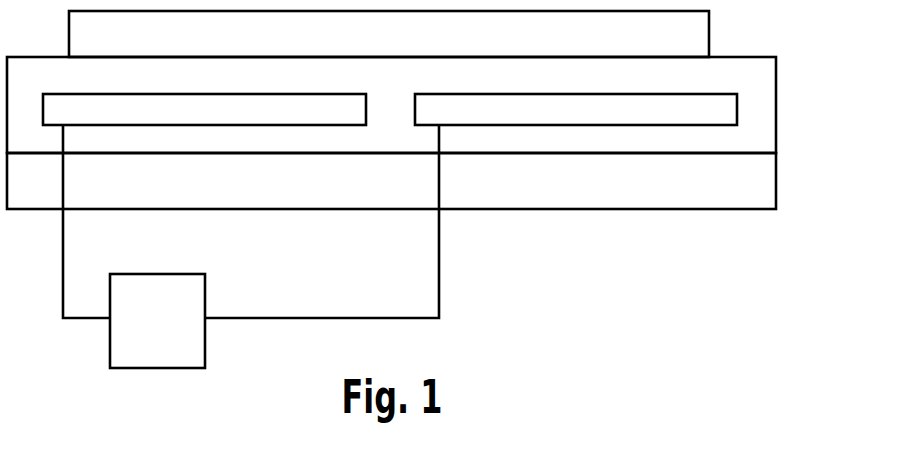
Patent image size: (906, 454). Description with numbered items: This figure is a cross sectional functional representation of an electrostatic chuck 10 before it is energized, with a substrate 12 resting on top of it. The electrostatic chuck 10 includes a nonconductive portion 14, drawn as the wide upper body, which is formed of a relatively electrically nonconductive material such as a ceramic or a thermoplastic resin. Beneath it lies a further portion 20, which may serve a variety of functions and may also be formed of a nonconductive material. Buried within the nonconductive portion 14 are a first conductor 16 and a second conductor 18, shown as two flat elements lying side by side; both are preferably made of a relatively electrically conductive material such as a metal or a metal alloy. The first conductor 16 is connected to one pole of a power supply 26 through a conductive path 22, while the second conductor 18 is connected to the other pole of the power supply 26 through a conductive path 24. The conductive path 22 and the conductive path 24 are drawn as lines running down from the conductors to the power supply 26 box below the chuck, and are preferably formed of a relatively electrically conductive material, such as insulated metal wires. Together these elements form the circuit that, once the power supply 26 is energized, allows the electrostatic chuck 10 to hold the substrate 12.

The electrostatic chuck 10 is at (431, 110).
The substrate 12 is at (389, 34).
The nonconductive portion 14 is at (391, 105).
The first conductor 16 is at (204, 109).
The second conductor 18 is at (576, 109).
The portion 20 is at (391, 181).
The conductive path 22 is at (70, 221).
The conductive path 24 is at (322, 221).
The power supply 26 is at (157, 321).